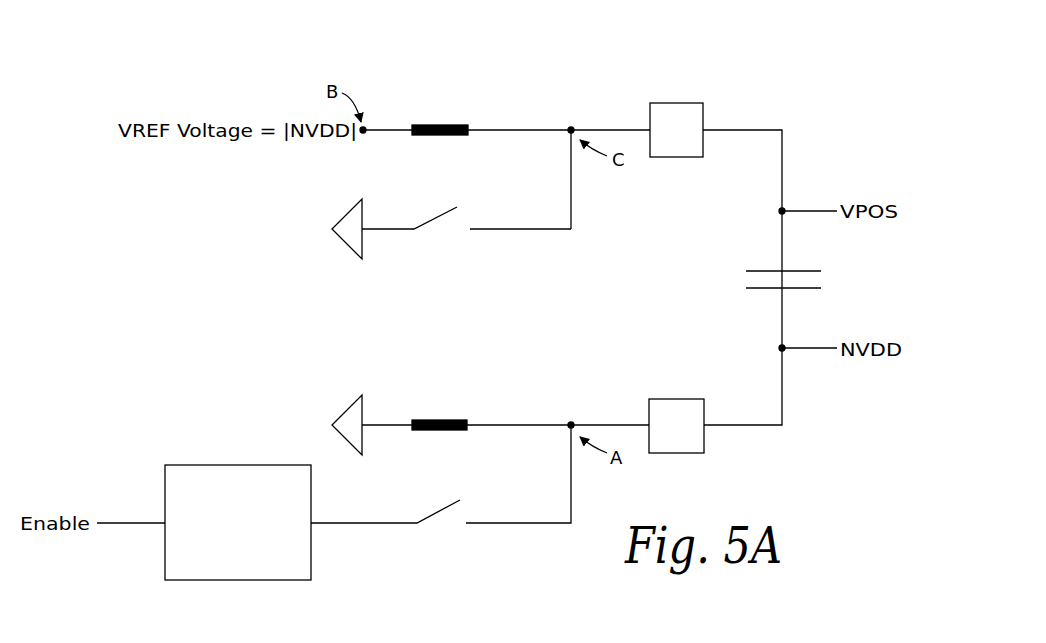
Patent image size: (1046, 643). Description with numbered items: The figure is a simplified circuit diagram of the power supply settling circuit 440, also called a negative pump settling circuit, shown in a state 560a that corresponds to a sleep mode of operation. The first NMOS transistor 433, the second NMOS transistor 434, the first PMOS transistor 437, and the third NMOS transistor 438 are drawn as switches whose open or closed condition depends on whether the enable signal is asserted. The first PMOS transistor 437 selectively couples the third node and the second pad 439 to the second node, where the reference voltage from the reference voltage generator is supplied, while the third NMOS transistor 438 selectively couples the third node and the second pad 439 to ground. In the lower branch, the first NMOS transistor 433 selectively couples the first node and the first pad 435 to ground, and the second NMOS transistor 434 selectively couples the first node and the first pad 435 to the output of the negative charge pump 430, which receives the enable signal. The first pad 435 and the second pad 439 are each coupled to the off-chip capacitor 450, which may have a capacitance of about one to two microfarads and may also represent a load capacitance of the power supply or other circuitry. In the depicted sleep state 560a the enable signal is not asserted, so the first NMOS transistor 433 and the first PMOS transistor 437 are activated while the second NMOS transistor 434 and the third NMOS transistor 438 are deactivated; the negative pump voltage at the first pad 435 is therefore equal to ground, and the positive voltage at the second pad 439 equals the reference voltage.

The negative charge pump 430 is at (180, 465).
The first NMOS transistor 433 is at (473, 412).
The second NMOS transistor 434 is at (449, 528).
The first pad 435 is at (690, 399).
The first PMOS transistor 437 is at (470, 116).
The third NMOS transistor 438 is at (449, 237).
The second pad 439 is at (690, 103).
The power supply settling circuit 440 is at (829, 118).
The off-chip capacitor 450 is at (806, 258).
The state 560a is at (794, 50).